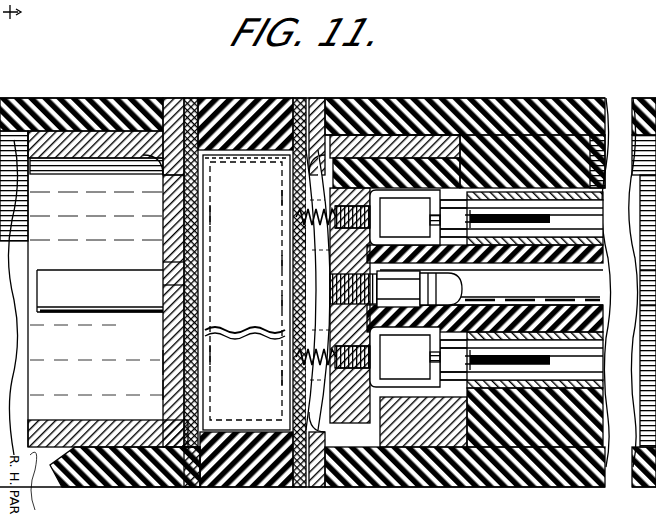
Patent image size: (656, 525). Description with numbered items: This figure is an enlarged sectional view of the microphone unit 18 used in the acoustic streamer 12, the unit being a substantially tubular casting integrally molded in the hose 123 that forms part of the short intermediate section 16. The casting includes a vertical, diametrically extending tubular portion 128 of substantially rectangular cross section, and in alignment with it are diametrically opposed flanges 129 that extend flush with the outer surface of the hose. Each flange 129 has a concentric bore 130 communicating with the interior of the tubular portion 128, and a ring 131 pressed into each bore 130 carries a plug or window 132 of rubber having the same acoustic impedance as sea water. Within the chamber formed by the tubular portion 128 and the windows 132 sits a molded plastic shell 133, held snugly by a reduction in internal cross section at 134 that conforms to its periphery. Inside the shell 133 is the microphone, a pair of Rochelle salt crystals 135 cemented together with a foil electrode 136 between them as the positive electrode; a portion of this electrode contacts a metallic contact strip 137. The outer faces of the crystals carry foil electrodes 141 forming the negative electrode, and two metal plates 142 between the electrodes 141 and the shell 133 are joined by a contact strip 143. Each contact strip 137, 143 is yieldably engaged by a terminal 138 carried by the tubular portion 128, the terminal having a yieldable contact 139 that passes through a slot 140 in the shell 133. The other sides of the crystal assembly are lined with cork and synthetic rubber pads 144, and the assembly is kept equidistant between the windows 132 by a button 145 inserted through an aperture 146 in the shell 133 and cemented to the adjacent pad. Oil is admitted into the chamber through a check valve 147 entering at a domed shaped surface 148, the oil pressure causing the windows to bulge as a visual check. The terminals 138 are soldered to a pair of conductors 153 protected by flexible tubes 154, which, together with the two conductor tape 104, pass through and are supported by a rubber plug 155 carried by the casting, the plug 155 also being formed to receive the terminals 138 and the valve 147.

The acoustic streamer 12 is at (540, 91).
The short intermediate section 16 is at (500, 98).
The microphone unit 18 is at (158, 356).
The two conductor tape 104 is at (346, 289).
The hose 123 is at (416, 115).
The tubular portion 128 is at (170, 372).
The flanges 129 is at (171, 104).
The bore 130 is at (190, 100).
The ring 131 is at (300, 100).
The plug or window 132 is at (262, 110).
The shell 133 is at (170, 328).
The reduction in internal cross section 134 is at (145, 98).
The salt crystals 135 is at (287, 322).
The electrode 136 is at (235, 352).
The contact strip 137 is at (282, 373).
The terminal 138 is at (418, 288).
The yieldable contact 139 is at (298, 284).
The slot 140 is at (282, 176).
The metal foil electrodes 141 is at (300, 237).
The plates 142 is at (205, 226).
The contact strip 143 is at (282, 198).
The pads 144 is at (290, 259).
The button 145 is at (185, 285).
The aperture 146 is at (185, 262).
The check valve 147 is at (458, 290).
The domed shaped surface 148 is at (280, 302).
The conductors 153 is at (590, 222).
The flexible tubes 154 is at (594, 200).
The rubber plug 155 is at (575, 98).